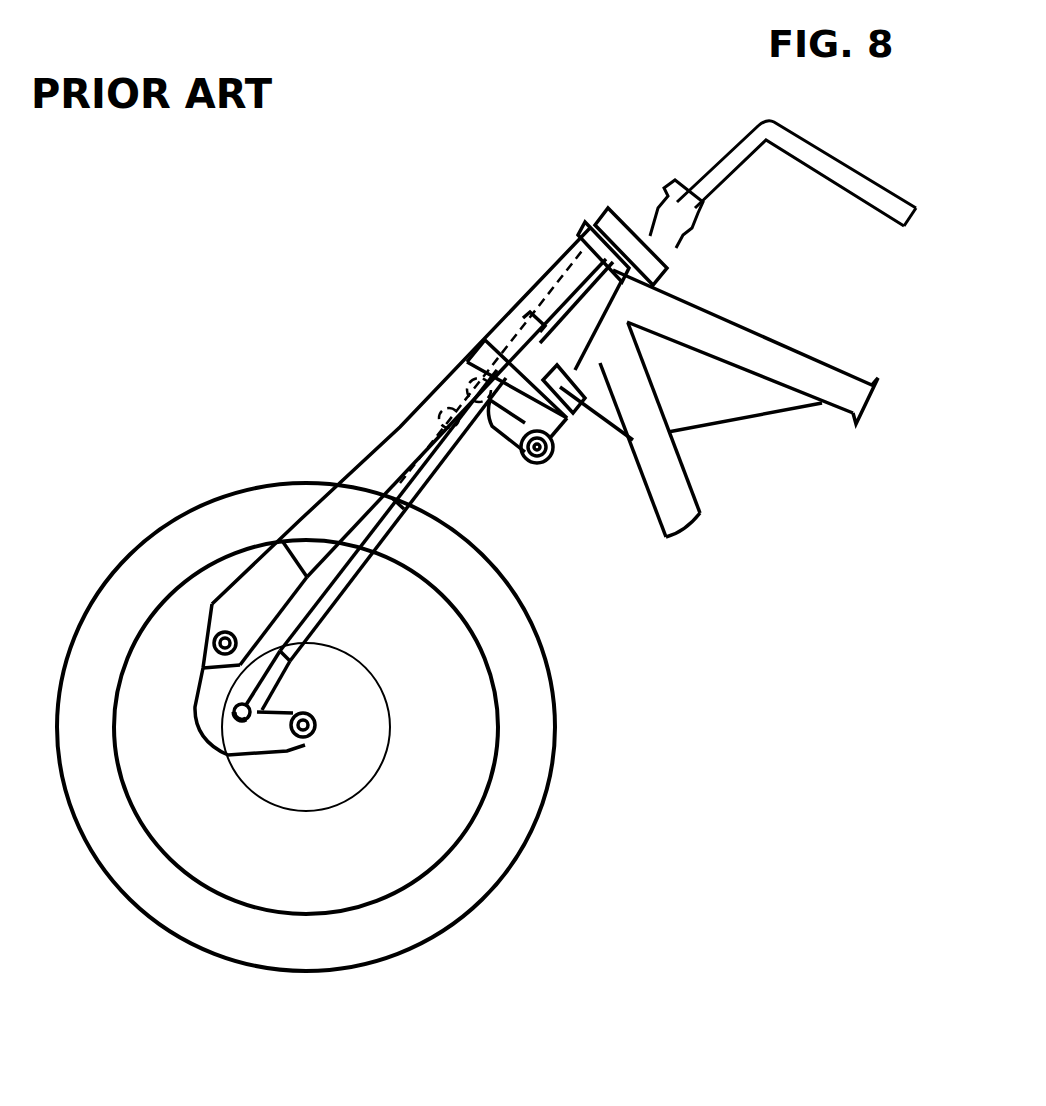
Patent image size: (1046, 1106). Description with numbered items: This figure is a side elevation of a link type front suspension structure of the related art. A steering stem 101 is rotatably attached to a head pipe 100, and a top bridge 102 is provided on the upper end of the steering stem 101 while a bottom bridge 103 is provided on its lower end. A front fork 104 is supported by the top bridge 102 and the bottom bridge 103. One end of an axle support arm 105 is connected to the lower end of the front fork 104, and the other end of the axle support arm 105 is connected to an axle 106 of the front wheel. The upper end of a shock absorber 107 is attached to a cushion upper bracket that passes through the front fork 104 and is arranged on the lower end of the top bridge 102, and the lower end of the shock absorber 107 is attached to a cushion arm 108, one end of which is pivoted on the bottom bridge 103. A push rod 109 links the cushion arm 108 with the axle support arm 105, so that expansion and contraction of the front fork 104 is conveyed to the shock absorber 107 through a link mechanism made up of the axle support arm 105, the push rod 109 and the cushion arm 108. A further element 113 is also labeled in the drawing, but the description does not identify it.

The head pipe 100 is at (613, 310).
The steering stem 101 is at (585, 390).
The top bridge 102 is at (613, 213).
The bottom bridge 103 is at (480, 347).
The front fork 104 is at (393, 445).
The axle support arm 105 is at (207, 708).
The axle 106 is at (316, 738).
The shock absorber 107 is at (522, 318).
The cushion arm 108 is at (500, 440).
The push rod 109 is at (363, 567).
The plate 113 is at (587, 225).